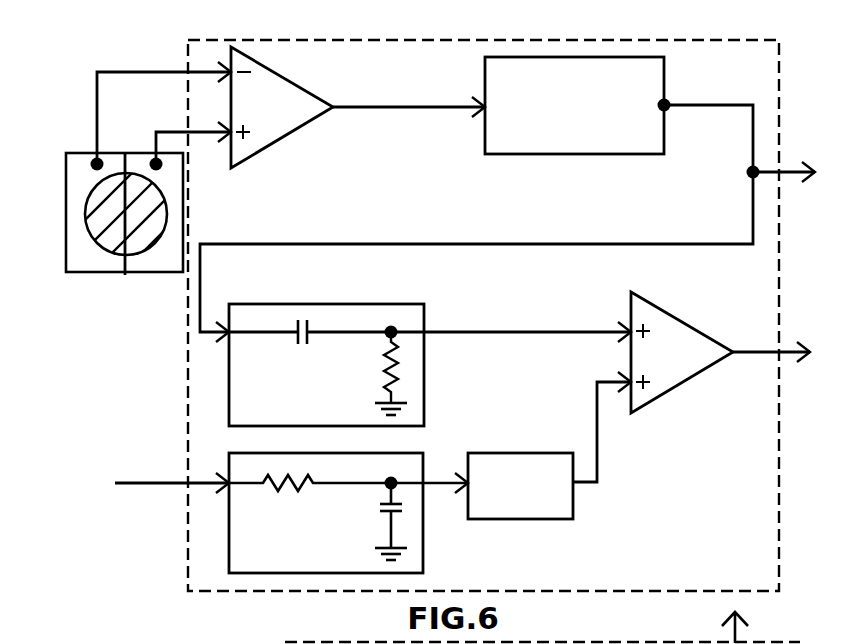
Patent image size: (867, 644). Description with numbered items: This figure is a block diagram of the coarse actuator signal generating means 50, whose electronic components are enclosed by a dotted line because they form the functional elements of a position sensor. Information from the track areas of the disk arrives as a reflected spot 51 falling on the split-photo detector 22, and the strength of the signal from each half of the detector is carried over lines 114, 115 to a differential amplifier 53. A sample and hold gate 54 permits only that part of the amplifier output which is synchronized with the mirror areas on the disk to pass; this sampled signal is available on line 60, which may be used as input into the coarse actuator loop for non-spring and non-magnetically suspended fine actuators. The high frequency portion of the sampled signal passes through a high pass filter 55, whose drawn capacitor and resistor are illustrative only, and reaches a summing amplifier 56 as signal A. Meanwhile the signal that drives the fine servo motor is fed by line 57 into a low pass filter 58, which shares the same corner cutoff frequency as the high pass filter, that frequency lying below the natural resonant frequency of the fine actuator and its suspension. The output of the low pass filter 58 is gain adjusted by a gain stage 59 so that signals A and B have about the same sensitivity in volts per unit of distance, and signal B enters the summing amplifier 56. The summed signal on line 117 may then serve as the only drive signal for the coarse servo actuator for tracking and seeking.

The split-photo detector 22 is at (80, 284).
The coarse actuator signal generating means 50 is at (650, 590).
The reflected spot 51 is at (129, 255).
The differential amplifier 53 is at (358, 107).
The sample and hold gate 54 is at (652, 95).
The high pass filter 55 is at (338, 304).
The summing amplifier 56 is at (660, 352).
The line 57 is at (148, 482).
The low pass filter 58 is at (418, 562).
The gain stage 59 is at (567, 503).
The line 60 is at (770, 164).
The line 114 is at (116, 70).
The line 115 is at (178, 130).
The line 117 is at (762, 348).